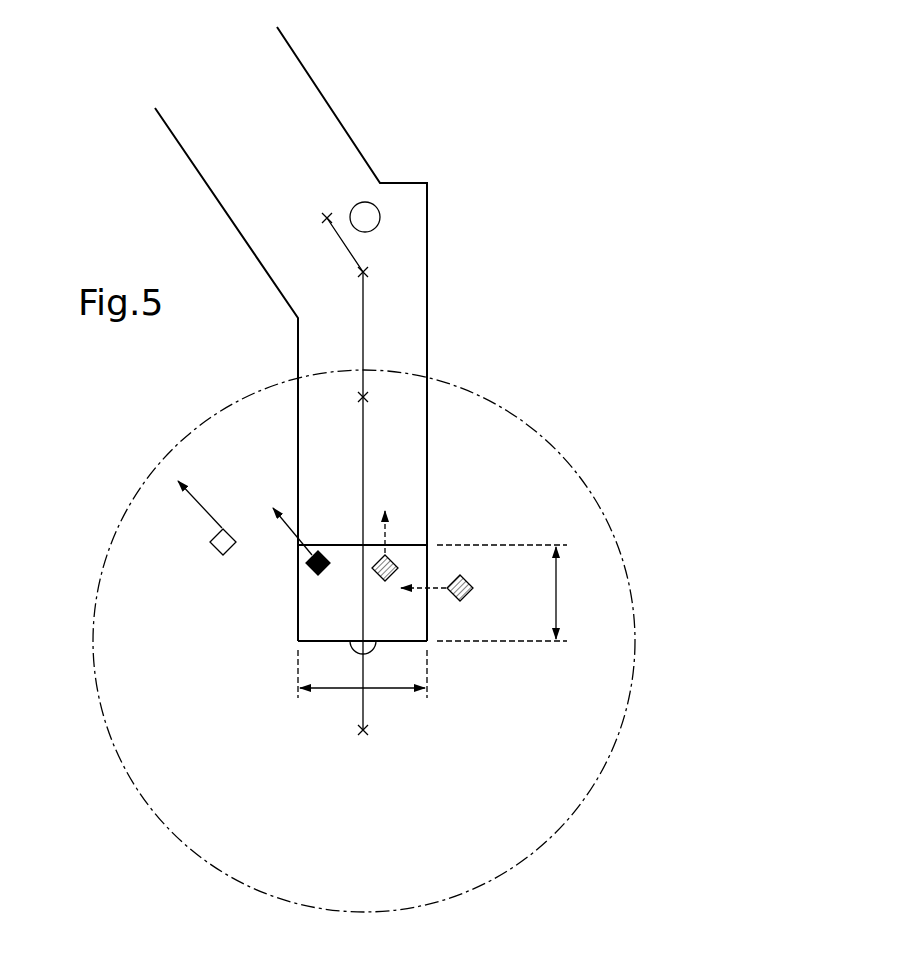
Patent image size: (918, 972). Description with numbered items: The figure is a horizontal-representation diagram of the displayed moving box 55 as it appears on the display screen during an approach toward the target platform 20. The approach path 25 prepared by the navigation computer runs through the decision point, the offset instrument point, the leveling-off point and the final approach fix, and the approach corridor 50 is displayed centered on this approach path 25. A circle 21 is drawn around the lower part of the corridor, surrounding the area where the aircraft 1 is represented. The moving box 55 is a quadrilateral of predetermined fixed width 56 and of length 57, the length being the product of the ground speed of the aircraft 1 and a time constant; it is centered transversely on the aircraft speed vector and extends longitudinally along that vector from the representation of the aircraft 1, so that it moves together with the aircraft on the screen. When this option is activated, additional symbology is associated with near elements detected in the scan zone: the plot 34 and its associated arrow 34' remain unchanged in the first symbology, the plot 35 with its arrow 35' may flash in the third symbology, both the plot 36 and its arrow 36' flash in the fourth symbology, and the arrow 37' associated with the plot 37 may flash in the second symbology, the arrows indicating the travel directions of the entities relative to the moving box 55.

The aircraft 1 is at (363, 641).
The target platform 20 is at (380, 217).
The circular zone around landing site 21 is at (530, 422).
The approach path 25 is at (364, 466).
The plot 34 is at (194, 557).
The arrow 34' is at (217, 492).
The plot 35 is at (288, 569).
The second obstacle displacement direction 35' is at (316, 520).
The plot 36 is at (423, 531).
The arrow 36' is at (437, 499).
The plot 37 is at (493, 593).
The arrow 37' is at (457, 544).
The approach corridor 50 is at (428, 317).
The moving box 55 is at (298, 637).
The width 56 is at (362, 674).
The length 57 is at (515, 593).